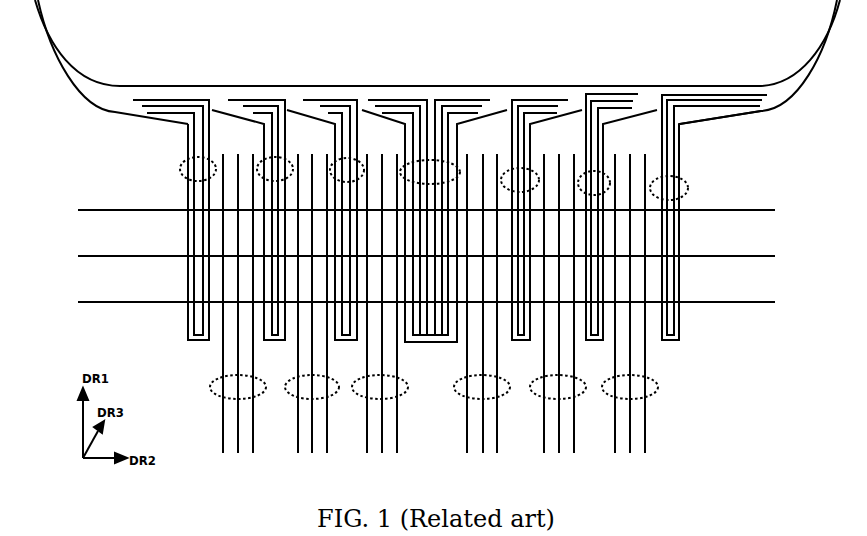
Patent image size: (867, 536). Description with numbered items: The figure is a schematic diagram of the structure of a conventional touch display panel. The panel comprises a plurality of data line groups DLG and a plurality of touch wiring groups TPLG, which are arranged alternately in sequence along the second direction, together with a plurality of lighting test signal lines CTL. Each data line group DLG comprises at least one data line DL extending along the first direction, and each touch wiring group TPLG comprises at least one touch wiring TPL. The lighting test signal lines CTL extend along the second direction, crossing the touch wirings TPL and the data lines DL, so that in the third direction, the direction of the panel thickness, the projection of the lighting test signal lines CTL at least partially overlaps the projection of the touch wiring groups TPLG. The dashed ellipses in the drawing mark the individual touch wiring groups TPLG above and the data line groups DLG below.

The touch wiring TPL is at (679, 322).
The touch wiring group TPLG is at (688, 188).
The lighting test signal line CTL is at (720, 256).
The data line DL is at (646, 436).
The data line group DLG is at (659, 386).